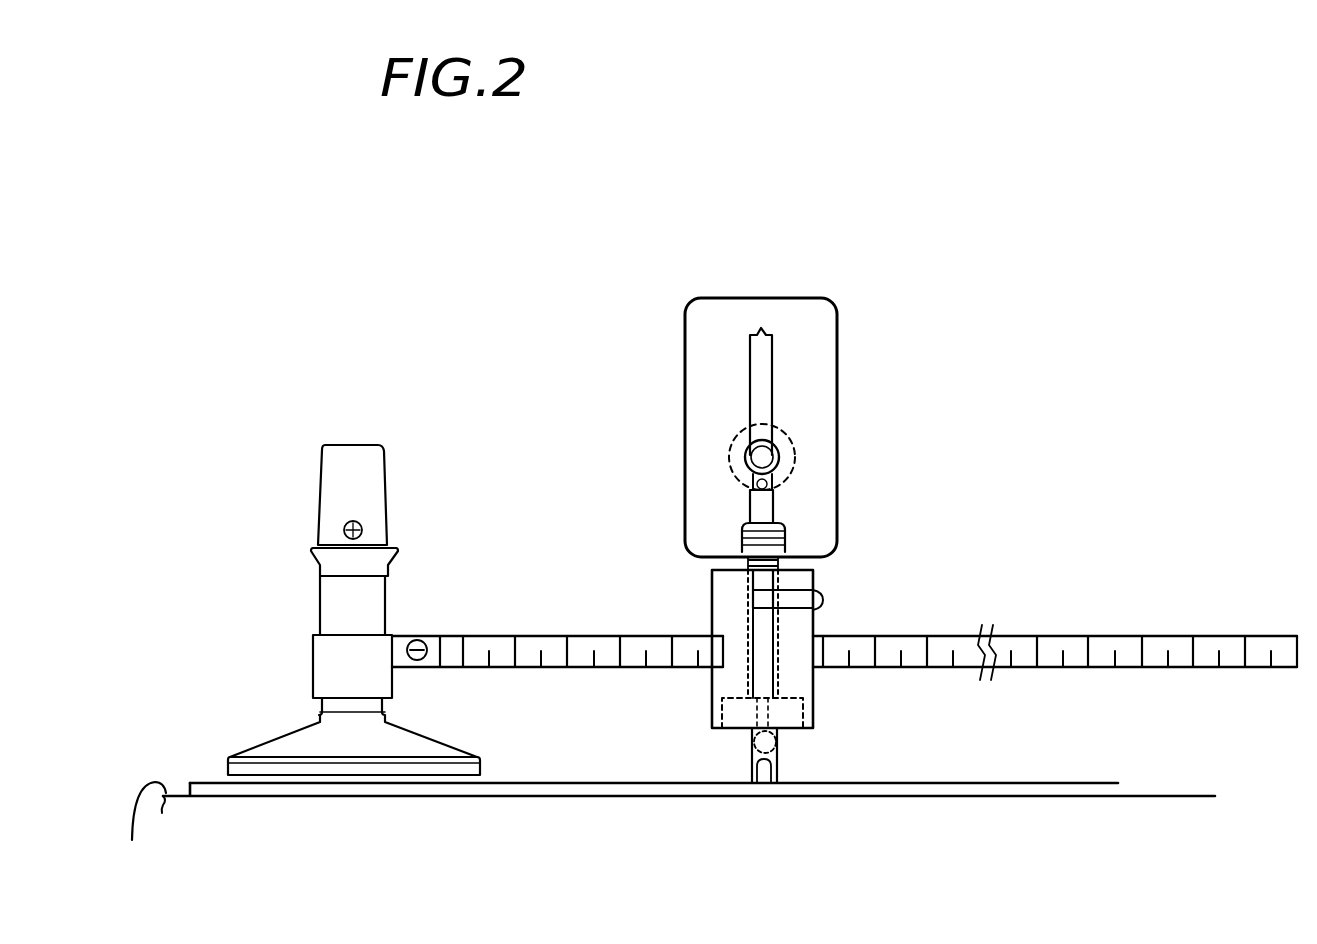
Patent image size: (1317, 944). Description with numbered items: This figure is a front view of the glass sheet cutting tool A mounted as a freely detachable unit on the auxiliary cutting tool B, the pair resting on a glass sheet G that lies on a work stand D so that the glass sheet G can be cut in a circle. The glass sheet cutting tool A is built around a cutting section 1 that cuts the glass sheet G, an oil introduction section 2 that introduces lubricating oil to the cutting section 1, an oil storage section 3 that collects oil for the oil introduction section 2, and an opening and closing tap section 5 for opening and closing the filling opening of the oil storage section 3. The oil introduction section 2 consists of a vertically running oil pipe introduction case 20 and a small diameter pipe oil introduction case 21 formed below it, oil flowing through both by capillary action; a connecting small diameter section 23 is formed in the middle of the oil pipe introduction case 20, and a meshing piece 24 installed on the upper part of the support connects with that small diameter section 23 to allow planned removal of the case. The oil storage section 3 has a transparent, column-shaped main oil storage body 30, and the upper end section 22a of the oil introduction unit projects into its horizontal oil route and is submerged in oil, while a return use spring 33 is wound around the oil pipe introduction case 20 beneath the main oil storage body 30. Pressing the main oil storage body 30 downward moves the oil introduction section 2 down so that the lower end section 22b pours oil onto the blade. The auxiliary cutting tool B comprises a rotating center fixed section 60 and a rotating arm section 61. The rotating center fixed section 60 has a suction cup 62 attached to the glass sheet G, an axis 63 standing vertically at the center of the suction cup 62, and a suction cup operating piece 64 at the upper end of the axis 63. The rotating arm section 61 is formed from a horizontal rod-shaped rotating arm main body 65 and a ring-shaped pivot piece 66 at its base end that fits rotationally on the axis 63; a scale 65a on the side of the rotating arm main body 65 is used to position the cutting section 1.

The cutting section 1 is at (774, 645).
The oil introduction section 2 is at (777, 425).
The oil storage section 3 is at (798, 395).
The opening and closing tap section 5 is at (720, 440).
The oil pipe introduction case 20 is at (772, 650).
The small diameter pipe oil introduction case 21 is at (752, 738).
The upper end section of the oil introduction unit 22a is at (766, 484).
The lower end section of the oil introduction unit 22b is at (770, 755).
The connecting small diameter section 23 is at (742, 592).
The meshing piece 24 is at (803, 588).
The main oil storage body 30 is at (717, 313).
The return use spring 33 is at (788, 558).
The rotating center fixed section 60 is at (326, 575).
The rotating arm section 61 is at (563, 632).
The suction cup 62 is at (227, 775).
The axis 63 is at (369, 603).
The suction cup operating piece 64 is at (357, 463).
The rotating arm main body 65 is at (1078, 638).
The scale 65a is at (1197, 668).
The pivot piece 66 is at (316, 673).
The glass sheet cutting tool A is at (868, 285).
The auxiliary cutting tool B is at (456, 504).
The glass sheet G is at (548, 782).
The work stand D is at (144, 832).